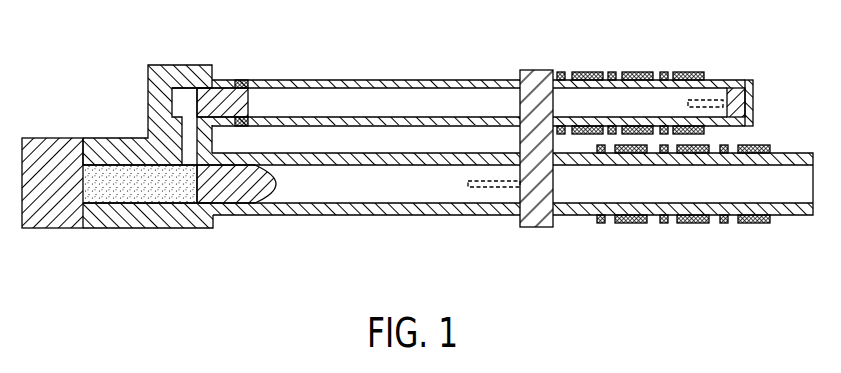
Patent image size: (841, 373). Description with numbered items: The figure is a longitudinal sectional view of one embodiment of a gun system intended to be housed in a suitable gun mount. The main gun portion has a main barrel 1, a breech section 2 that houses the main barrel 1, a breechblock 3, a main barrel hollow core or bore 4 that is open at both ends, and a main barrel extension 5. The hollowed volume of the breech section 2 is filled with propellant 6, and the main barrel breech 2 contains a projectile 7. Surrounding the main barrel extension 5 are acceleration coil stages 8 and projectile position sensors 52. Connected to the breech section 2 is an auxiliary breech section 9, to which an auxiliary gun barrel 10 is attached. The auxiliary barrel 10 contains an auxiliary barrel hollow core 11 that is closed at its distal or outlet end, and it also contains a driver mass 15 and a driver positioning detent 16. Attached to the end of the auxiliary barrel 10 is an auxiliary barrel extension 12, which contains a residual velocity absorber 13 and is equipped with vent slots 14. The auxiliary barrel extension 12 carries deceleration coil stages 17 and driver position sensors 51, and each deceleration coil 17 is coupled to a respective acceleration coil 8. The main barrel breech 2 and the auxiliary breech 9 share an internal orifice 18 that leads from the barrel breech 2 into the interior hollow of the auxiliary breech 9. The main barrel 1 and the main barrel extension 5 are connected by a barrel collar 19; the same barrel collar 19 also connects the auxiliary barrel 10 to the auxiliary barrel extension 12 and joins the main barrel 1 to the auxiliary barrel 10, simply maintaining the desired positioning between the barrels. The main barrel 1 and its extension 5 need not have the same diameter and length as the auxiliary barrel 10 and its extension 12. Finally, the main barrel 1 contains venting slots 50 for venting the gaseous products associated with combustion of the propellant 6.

The main barrel 1 is at (345, 208).
The breech section 2 is at (158, 218).
The breechblock 3 is at (58, 220).
The main barrel hollow core 4 is at (397, 195).
The main barrel extension 5 is at (583, 208).
The propellant 6 is at (123, 175).
The projectile 7 is at (250, 200).
The acceleration coil stages 8 is at (622, 224).
The auxiliary breech section 9 is at (160, 73).
The auxiliary gun barrel 10 is at (318, 84).
The auxiliary barrel hollow core 11 is at (412, 95).
The auxiliary barrel extension 12 is at (632, 72).
The residual velocity absorber 13 is at (738, 92).
The vent slots 14 is at (707, 92).
The driver mass 15 is at (217, 90).
The driver positioning detent 16 is at (240, 82).
The deceleration coil stages 17 is at (580, 74).
The internal orifice 18 is at (187, 100).
The barrel collar 19 is at (540, 82).
The venting slots 50 is at (493, 188).
The driver position sensors 51 is at (560, 73).
The projectile position sensors 52 is at (602, 224).